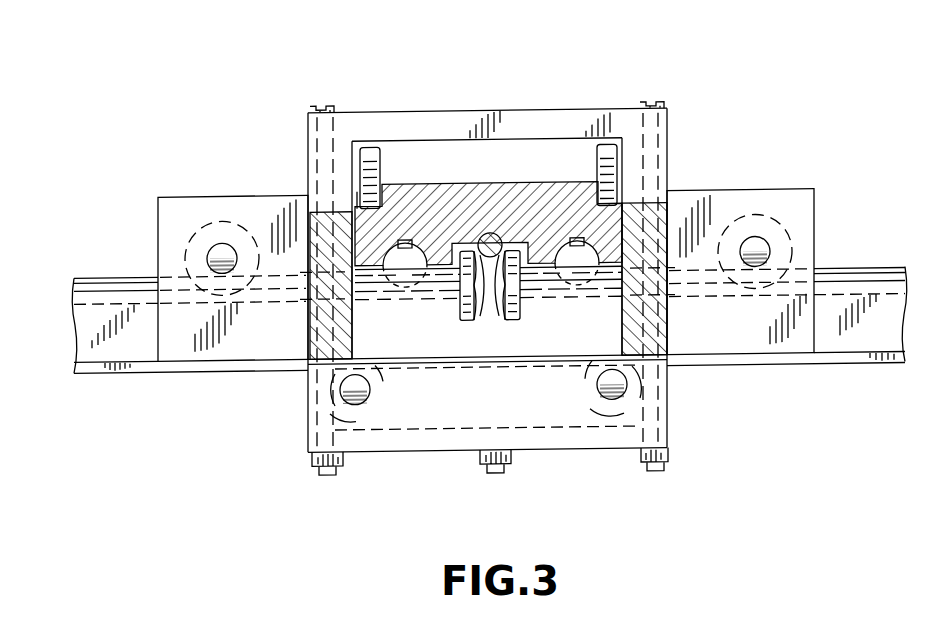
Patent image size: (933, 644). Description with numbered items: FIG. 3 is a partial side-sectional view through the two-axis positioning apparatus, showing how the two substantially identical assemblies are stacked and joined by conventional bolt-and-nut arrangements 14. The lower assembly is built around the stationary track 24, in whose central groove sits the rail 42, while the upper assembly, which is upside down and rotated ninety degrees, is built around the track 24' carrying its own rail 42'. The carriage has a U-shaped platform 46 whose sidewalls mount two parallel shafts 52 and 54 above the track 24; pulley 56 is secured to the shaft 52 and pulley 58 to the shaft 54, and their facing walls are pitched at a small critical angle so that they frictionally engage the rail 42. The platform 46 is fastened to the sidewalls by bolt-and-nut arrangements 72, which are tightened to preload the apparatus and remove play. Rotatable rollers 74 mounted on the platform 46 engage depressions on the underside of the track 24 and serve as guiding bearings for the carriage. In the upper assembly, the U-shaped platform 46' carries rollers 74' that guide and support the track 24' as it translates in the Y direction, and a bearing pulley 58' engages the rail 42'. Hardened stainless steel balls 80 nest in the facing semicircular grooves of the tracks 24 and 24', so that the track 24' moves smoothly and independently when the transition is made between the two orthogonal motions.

The bolt-and-nut arrangement 14 is at (328, 476).
The track 24 is at (478, 351).
The track 24' is at (487, 280).
The rail 42 is at (787, 286).
The rail 42' is at (526, 201).
The U-shaped platform 46 is at (487, 421).
The U-shaped platform 46' is at (487, 91).
The shaft 52 is at (222, 250).
The shaft 54 is at (765, 250).
The pulley 56 is at (195, 245).
The pulley 58 is at (755, 204).
The bearing pulley 58' is at (490, 305).
The bolt-and-nut arrangement 72 is at (496, 476).
The roller 74 is at (485, 391).
The roller 74' is at (487, 120).
The ball 80 is at (402, 300).